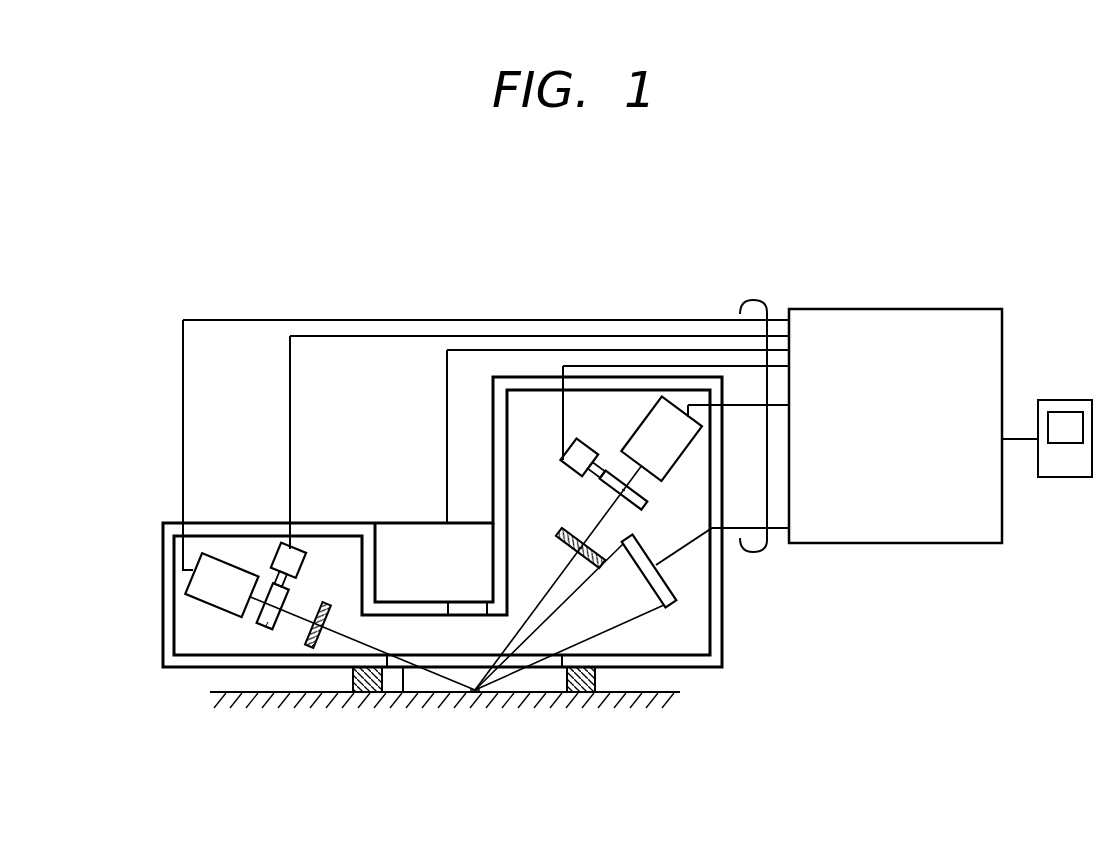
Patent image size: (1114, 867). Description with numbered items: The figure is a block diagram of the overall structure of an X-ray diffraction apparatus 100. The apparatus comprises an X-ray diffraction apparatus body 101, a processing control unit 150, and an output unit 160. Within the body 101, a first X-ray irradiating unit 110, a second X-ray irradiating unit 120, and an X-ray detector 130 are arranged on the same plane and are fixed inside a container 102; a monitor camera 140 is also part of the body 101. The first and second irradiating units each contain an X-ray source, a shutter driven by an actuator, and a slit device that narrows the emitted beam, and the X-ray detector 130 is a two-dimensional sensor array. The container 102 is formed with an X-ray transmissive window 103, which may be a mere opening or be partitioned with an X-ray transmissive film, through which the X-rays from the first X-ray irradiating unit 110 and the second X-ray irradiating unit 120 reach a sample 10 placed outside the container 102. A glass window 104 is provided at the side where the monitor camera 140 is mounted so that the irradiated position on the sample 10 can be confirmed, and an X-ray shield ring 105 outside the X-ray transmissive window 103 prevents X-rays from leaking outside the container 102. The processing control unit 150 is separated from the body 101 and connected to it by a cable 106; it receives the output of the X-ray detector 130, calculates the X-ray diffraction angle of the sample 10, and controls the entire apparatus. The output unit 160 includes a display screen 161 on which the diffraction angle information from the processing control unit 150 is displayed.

The sample 10 is at (672, 702).
The X-ray diffraction apparatus 100 is at (554, 167).
The X-ray diffraction apparatus body 101 is at (123, 308).
The container 102 is at (722, 633).
The X-ray transmissive window 103 is at (403, 692).
The glass window 104 is at (467, 613).
The X-ray shield ring 105 is at (585, 692).
The cable 106 is at (755, 300).
The first X-ray irradiating unit 110 is at (160, 775).
The second X-ray irradiating unit 120 is at (430, 262).
The X-ray detector 130 is at (667, 582).
The monitor camera 140 is at (410, 533).
The processing control unit 150 is at (891, 309).
The output unit 160 is at (1065, 400).
The display screen 161 is at (1065, 443).